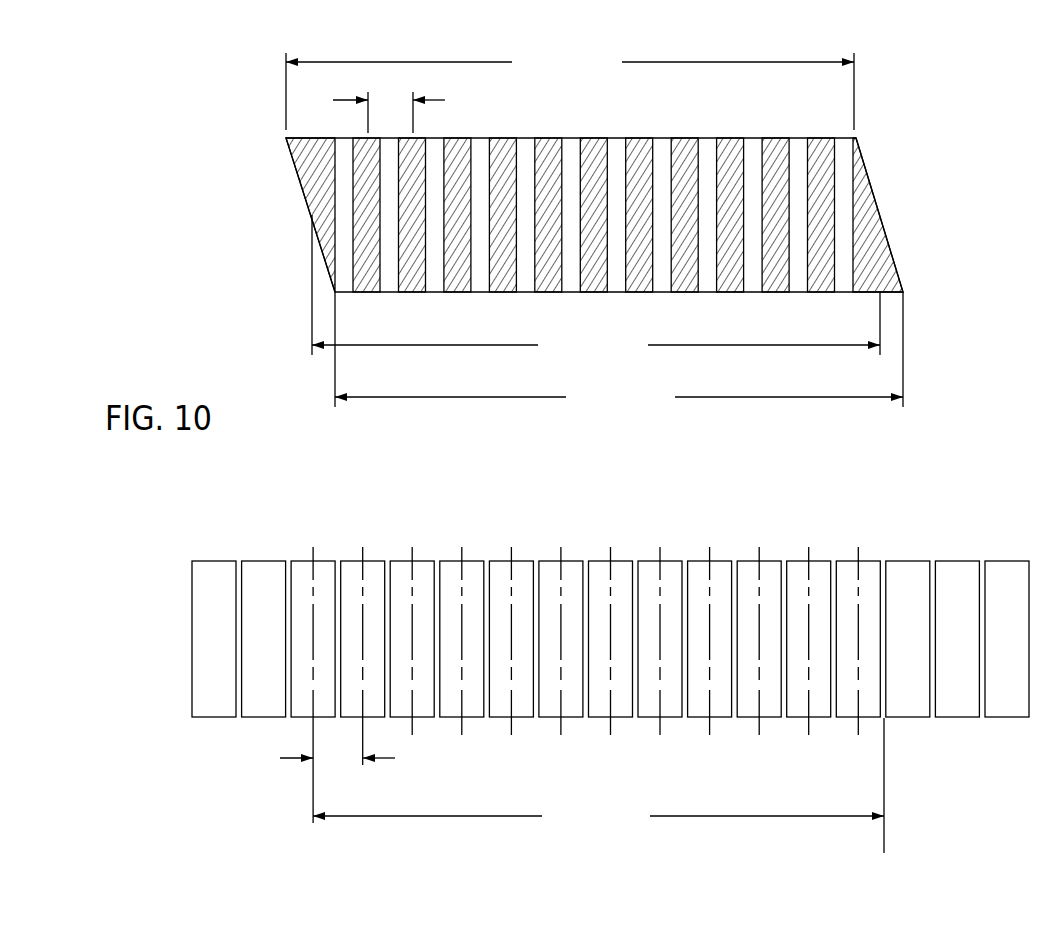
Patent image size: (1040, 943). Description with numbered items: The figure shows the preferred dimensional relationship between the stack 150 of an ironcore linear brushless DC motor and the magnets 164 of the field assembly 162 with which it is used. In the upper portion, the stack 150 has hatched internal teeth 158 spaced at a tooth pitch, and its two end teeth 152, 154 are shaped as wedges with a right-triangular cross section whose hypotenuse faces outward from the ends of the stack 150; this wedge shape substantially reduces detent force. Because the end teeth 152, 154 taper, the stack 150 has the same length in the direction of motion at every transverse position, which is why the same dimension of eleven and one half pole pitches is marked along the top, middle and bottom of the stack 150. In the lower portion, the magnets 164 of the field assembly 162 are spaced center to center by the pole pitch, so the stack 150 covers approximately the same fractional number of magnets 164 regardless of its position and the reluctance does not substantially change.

The stack 150 is at (896, 84).
The wedge-shaped end tooth 152 is at (313, 171).
The wedge-shaped end tooth 154 is at (895, 262).
The internal teeth 158 is at (592, 147).
The field assembly 162 is at (838, 506).
The magnets 164 is at (210, 570).